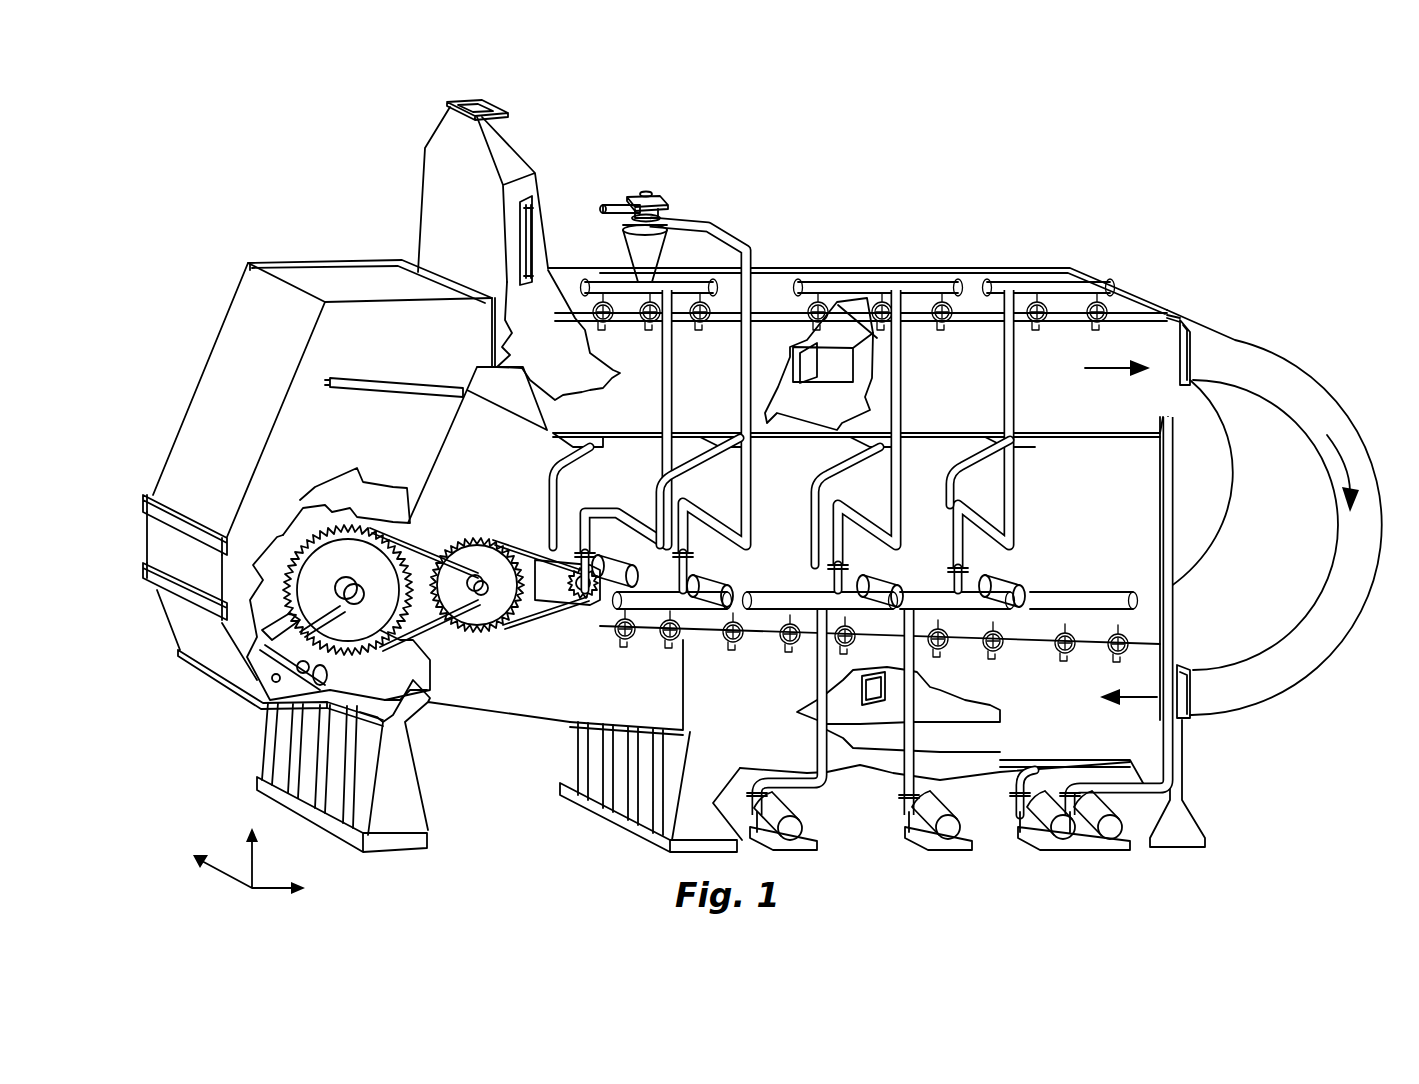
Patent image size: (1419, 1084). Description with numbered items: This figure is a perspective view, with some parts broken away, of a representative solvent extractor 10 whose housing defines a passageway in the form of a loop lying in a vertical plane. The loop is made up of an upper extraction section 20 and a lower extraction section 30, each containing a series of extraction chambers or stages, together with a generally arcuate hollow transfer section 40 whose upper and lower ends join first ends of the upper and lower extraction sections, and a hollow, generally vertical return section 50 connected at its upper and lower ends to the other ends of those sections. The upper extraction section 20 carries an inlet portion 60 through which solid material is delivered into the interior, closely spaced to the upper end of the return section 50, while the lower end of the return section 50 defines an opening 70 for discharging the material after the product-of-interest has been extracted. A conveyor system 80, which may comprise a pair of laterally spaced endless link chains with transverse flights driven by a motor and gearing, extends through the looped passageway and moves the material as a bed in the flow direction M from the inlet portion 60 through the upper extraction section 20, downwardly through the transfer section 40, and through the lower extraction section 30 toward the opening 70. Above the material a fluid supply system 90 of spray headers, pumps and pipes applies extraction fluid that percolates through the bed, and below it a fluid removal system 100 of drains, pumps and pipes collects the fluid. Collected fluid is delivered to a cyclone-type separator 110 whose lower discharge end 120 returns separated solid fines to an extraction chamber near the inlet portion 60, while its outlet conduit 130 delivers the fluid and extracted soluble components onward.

The extractor 10 is at (273, 187).
The upper extraction section 20 is at (1223, 298).
The lower extraction section 30 is at (1203, 757).
The transfer section 40 is at (1287, 388).
The return section 50 is at (202, 410).
The inlet portion 60 is at (500, 112).
The opening 70 is at (240, 697).
The conveyor system 80 is at (807, 362).
The fluid supply system 90 is at (930, 252).
The fluid removal system 100 is at (877, 825).
The cyclone-type separator 110 is at (652, 192).
The lower discharge end 120 is at (650, 277).
The outlet conduit 130 is at (603, 208).